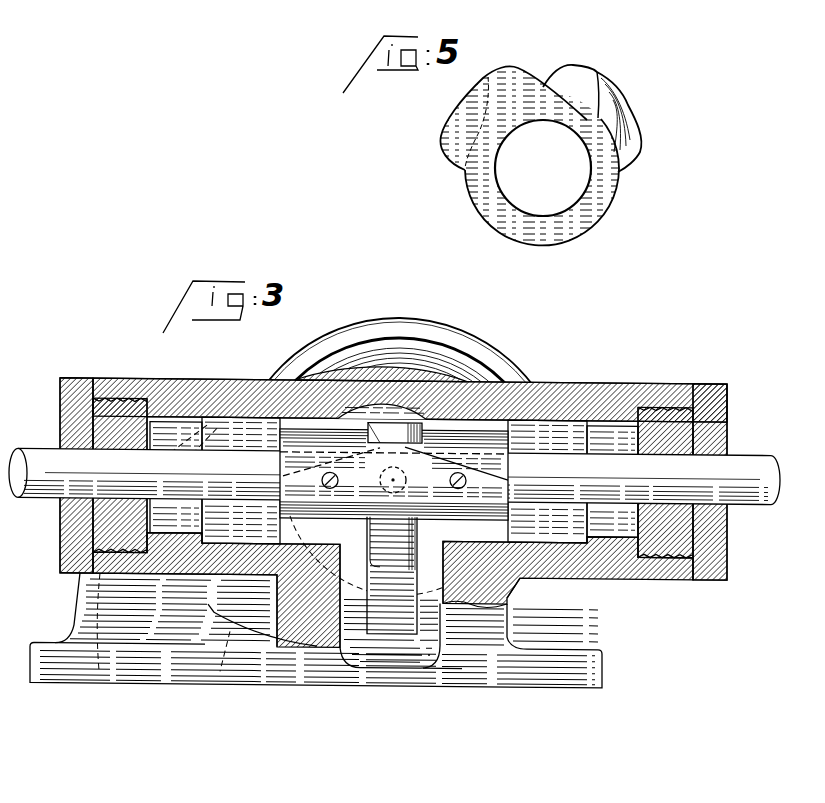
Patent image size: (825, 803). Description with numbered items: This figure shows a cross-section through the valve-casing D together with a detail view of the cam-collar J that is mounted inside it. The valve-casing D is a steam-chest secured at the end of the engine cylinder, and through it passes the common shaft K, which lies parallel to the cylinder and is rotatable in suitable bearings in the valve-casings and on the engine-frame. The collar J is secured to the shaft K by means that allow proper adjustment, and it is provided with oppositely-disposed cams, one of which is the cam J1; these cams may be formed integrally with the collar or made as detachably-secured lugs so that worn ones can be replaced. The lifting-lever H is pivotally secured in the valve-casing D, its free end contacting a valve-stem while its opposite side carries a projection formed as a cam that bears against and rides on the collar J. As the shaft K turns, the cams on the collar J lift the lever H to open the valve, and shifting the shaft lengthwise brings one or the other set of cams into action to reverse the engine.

In FIG. 5, the collar J is at (618, 191).
In FIG. 3, the collar J is at (310, 440).
In FIG. 5, the cam J1 is at (670, 82).
In FIG. 3, the cam J1 is at (417, 470).
In FIG. 3, the valve-casing D is at (590, 386).
In FIG. 3, the shaft K is at (740, 466).
In FIG. 3, the lifting-lever H is at (520, 582).